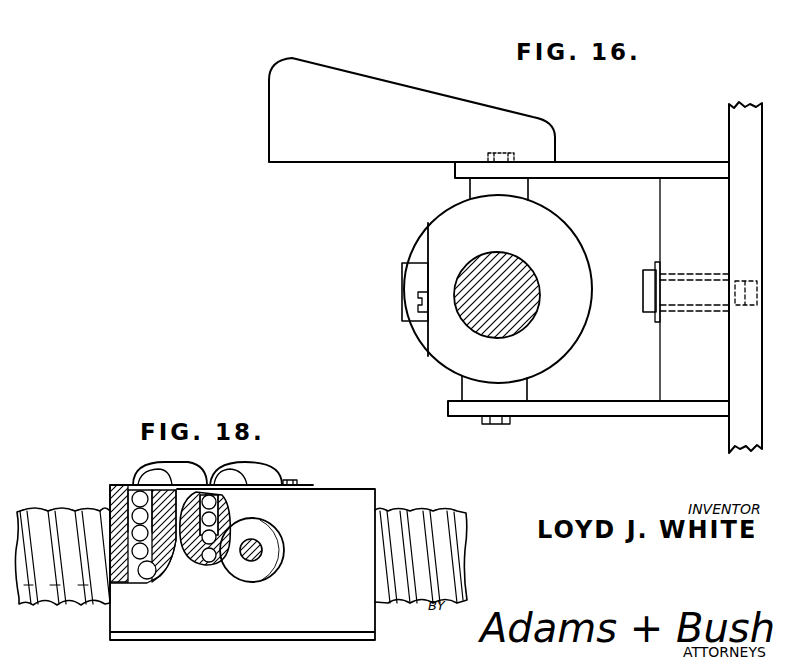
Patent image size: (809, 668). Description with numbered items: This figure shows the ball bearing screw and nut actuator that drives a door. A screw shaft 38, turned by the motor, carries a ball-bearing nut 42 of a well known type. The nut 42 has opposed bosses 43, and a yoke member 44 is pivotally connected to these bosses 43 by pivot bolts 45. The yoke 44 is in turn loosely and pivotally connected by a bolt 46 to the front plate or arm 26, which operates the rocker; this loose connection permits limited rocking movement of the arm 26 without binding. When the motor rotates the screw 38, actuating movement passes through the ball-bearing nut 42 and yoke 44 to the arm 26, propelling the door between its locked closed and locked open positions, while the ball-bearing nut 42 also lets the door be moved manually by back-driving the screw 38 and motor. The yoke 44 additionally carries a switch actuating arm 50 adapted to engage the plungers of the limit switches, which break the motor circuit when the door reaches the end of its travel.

In FIG. 16, the front plate or arm 26 is at (746, 106).
In FIG. 16, the screw shaft 38 is at (520, 275).
In FIG. 18, the screw shaft 38 is at (412, 517).
In FIG. 16, the ball-bearing nut 42 is at (401, 358).
In FIG. 18, the ball-bearing nut 42 is at (344, 485).
In FIG. 16, the opposed bosses 43 is at (537, 196).
In FIG. 16, the yoke member 44 is at (620, 162).
In FIG. 16, the pivot bolts 45 is at (518, 157).
In FIG. 16, the bolt 46 is at (647, 313).
In FIG. 16, the switch actuating arm 50 is at (410, 131).